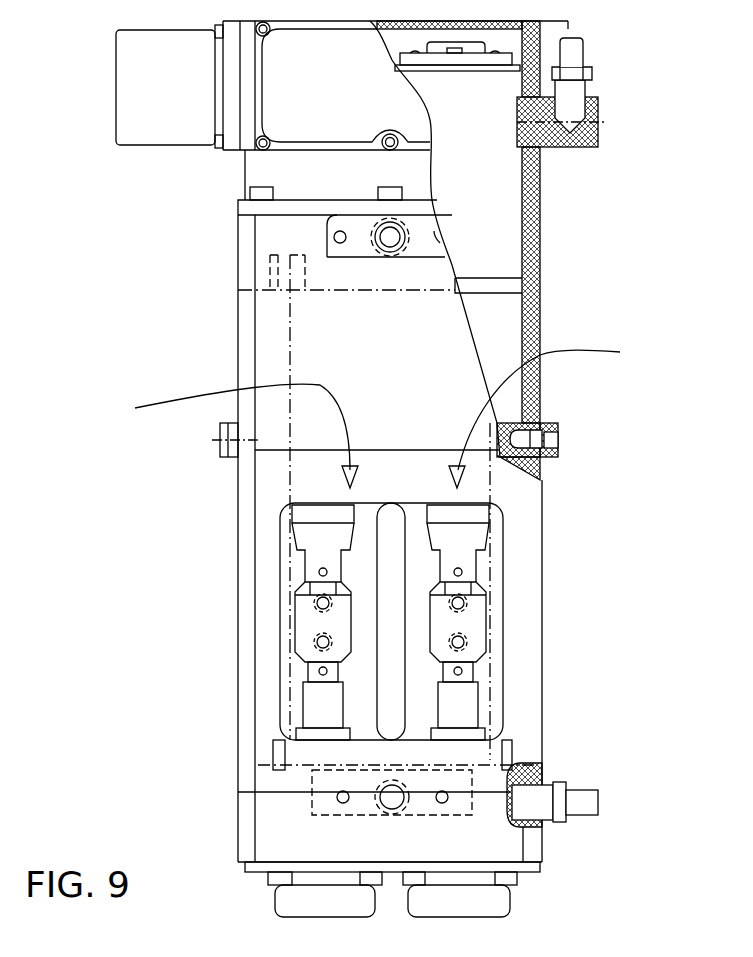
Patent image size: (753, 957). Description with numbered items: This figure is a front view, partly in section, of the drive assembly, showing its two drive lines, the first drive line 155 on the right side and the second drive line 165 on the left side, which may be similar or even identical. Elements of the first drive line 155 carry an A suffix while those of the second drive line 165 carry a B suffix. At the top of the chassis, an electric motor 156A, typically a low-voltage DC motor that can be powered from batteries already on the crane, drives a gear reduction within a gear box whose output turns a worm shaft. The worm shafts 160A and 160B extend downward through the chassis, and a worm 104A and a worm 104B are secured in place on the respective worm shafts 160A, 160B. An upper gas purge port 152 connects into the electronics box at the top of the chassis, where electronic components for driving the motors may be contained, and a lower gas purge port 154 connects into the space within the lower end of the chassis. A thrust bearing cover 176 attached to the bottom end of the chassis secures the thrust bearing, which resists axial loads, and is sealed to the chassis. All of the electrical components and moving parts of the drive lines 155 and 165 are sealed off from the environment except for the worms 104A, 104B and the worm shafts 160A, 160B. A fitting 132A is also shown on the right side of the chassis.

The upper gas purge port 152 is at (573, 95).
The electric motor 156A is at (505, 258).
The first drive line 155 is at (555, 408).
The fitting 132A is at (558, 437).
The second drive line 165 is at (227, 436).
The worm shaft 160B is at (315, 540).
The worm shaft 160A is at (472, 533).
The worm 104B is at (325, 622).
The worm 104A is at (470, 622).
The lower gas purge port 154 is at (582, 795).
The thrust bearing cover 176 is at (500, 903).